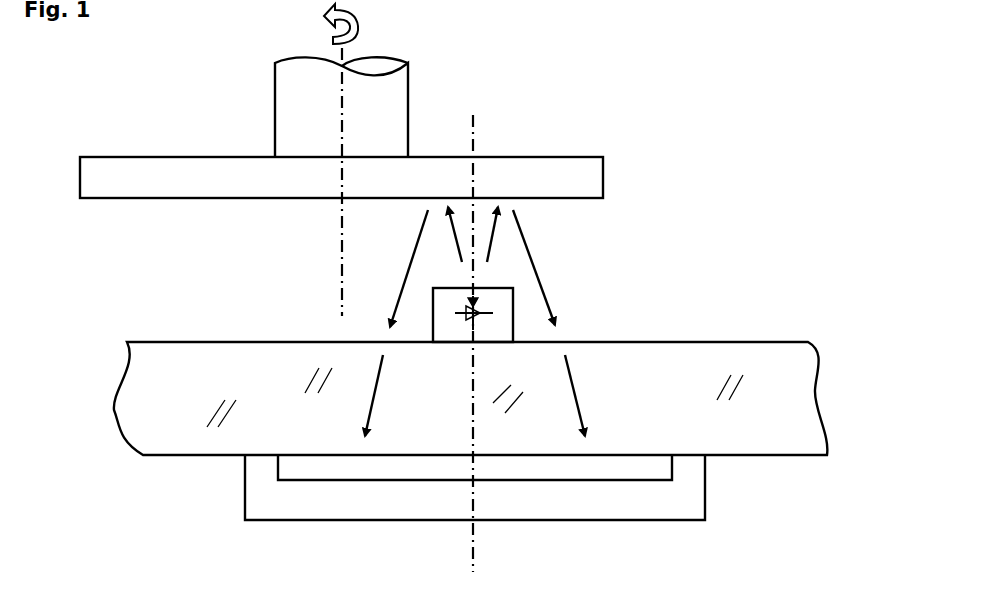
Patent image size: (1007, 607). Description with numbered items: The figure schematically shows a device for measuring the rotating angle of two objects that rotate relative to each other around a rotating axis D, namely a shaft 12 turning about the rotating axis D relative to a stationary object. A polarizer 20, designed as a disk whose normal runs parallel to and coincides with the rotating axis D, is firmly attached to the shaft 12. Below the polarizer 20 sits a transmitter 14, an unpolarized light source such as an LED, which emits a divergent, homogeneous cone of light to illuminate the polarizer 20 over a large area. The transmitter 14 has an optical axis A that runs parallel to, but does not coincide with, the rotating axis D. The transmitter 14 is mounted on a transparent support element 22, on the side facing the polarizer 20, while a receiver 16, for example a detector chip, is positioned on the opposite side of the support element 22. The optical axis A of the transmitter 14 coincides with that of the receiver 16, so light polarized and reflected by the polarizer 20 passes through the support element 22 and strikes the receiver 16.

The shaft 12 is at (300, 113).
The polarizer 20 is at (583, 183).
The transmitter 14 is at (500, 315).
The support element 22 is at (205, 372).
The receiver 16 is at (527, 468).
The optical axis A is at (478, 130).
The rotating axis D is at (338, 88).